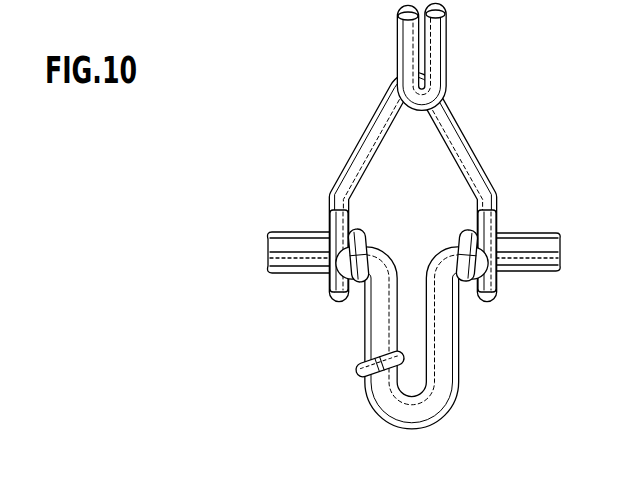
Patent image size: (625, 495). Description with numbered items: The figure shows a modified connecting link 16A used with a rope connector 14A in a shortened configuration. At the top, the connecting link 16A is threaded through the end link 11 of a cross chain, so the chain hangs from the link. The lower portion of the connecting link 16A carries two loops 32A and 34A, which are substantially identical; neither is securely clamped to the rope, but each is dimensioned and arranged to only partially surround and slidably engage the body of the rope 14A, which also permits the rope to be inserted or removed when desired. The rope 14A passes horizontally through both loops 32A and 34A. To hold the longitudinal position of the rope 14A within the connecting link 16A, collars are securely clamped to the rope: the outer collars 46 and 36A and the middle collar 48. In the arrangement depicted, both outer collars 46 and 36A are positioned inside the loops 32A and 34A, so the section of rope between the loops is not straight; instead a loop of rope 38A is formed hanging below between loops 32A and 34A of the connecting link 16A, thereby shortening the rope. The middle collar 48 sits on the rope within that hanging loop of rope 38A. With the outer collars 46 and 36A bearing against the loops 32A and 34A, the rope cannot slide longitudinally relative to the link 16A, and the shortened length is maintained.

The end link 11 is at (398, 39).
The connecting link 16A is at (459, 116).
The rope connector 14A is at (297, 232).
The loop 32A is at (329, 291).
The loop 34A is at (497, 290).
The collar 46 is at (357, 282).
The collar 36A is at (468, 283).
The collar 48 is at (352, 372).
The loop of rope 38A is at (427, 407).